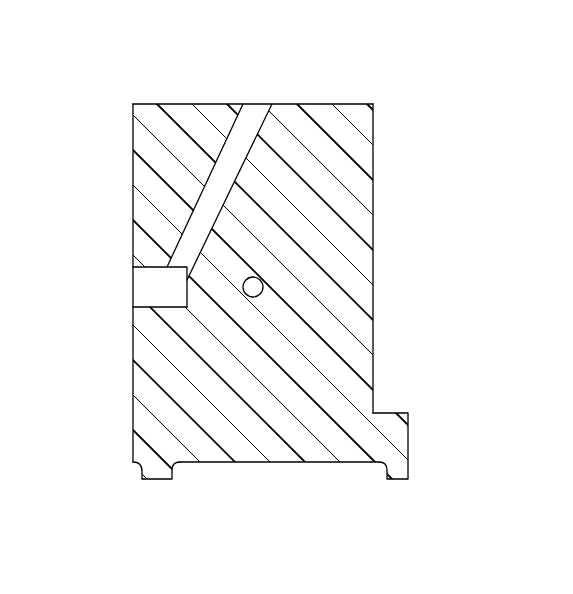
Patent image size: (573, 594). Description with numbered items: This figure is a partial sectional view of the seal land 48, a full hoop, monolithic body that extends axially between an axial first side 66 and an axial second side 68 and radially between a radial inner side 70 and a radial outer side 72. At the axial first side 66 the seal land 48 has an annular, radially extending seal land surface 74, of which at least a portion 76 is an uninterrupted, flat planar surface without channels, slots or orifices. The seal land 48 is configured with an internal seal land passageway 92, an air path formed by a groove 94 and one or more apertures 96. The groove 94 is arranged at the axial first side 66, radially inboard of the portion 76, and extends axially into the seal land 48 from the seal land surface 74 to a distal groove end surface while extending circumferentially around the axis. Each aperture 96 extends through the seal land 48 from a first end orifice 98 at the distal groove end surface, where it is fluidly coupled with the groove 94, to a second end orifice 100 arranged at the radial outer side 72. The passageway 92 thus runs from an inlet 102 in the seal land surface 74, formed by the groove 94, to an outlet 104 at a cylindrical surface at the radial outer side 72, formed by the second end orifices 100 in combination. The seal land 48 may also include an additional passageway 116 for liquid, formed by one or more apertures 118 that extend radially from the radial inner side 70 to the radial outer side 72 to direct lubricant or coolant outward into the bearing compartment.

The seal land 48 is at (441, 119).
The axial first side 66 is at (132, 395).
The axial second side 68 is at (411, 436).
The radial inner side 70 is at (155, 481).
The radial outer side 72 is at (157, 102).
The seal land surface 74 is at (133, 123).
The portion of the seal land surface 76 is at (110, 135).
The seal land passageway 92 is at (216, 231).
The groove 94 is at (151, 307).
The aperture 96 is at (241, 156).
The first end orifice 98 is at (187, 277).
The second end orifice 100 is at (262, 153).
The inlet 102 is at (133, 287).
The outlet 104 is at (250, 192).
The additional passageway 116 is at (377, 281).
The aperture 118 is at (270, 292).